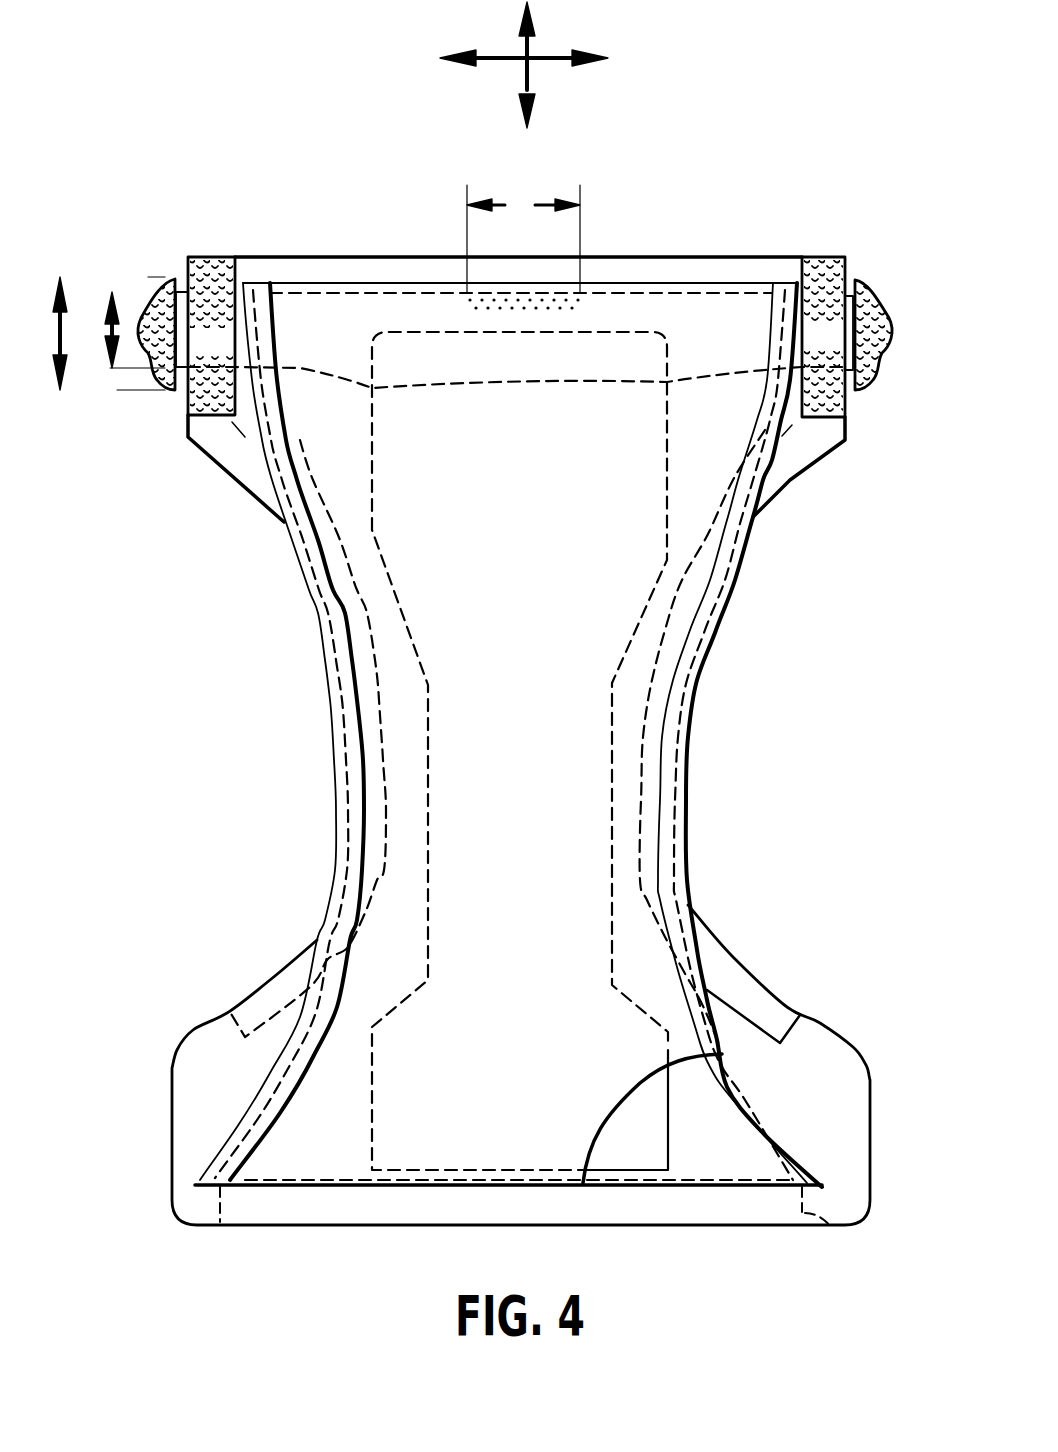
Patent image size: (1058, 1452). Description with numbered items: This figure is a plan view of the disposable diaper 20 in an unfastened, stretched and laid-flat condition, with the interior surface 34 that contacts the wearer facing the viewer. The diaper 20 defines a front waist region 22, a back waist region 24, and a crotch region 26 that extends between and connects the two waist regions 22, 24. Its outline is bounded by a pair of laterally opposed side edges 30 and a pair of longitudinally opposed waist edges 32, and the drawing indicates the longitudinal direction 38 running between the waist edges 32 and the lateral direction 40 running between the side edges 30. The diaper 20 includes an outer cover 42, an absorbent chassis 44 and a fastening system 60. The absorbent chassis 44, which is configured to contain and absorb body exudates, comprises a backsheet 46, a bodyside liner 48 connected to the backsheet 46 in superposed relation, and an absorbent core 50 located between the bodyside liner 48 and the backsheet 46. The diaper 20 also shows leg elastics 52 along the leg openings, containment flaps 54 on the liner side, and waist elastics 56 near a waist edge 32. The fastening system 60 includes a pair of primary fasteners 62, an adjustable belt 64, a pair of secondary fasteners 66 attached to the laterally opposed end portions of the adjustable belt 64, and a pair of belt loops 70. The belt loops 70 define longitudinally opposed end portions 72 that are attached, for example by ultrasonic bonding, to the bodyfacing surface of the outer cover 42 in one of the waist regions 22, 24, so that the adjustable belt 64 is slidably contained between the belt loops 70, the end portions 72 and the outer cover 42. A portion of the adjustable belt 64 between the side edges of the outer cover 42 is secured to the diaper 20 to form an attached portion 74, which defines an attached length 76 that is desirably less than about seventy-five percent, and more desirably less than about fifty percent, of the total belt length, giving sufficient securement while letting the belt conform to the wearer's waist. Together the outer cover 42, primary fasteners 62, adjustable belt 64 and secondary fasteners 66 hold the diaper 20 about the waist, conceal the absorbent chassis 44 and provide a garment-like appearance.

The disposable diaper 20 is at (290, 120).
The front waist region 22 is at (870, 1078).
The back waist region 24 is at (845, 484).
The crotch region 26 is at (768, 680).
The side edges 30 is at (318, 637).
The waist edges 32 is at (690, 257).
The interior surface 34 is at (398, 538).
The longitudinal direction 38 is at (532, 44).
The lateral direction 40 is at (553, 60).
The outer cover 42 is at (820, 1063).
The absorbent chassis 44 is at (293, 1150).
The backsheet 46 is at (740, 1160).
The bodyside liner 48 is at (592, 1160).
The absorbent core 50 is at (672, 1160).
The leg elastics 52 is at (778, 1015).
The containment flaps 54 is at (318, 942).
The waist elastics 56 is at (832, 1232).
The fastening system 60 is at (162, 432).
The primary fasteners 62 is at (208, 258).
The adjustable belt 64 is at (172, 291).
The secondary fasteners 66 is at (173, 280).
The belt loops 70 is at (237, 268).
The end portions 72 is at (838, 268).
The attached portion 74 is at (580, 303).
The attached length 76 is at (523, 238).